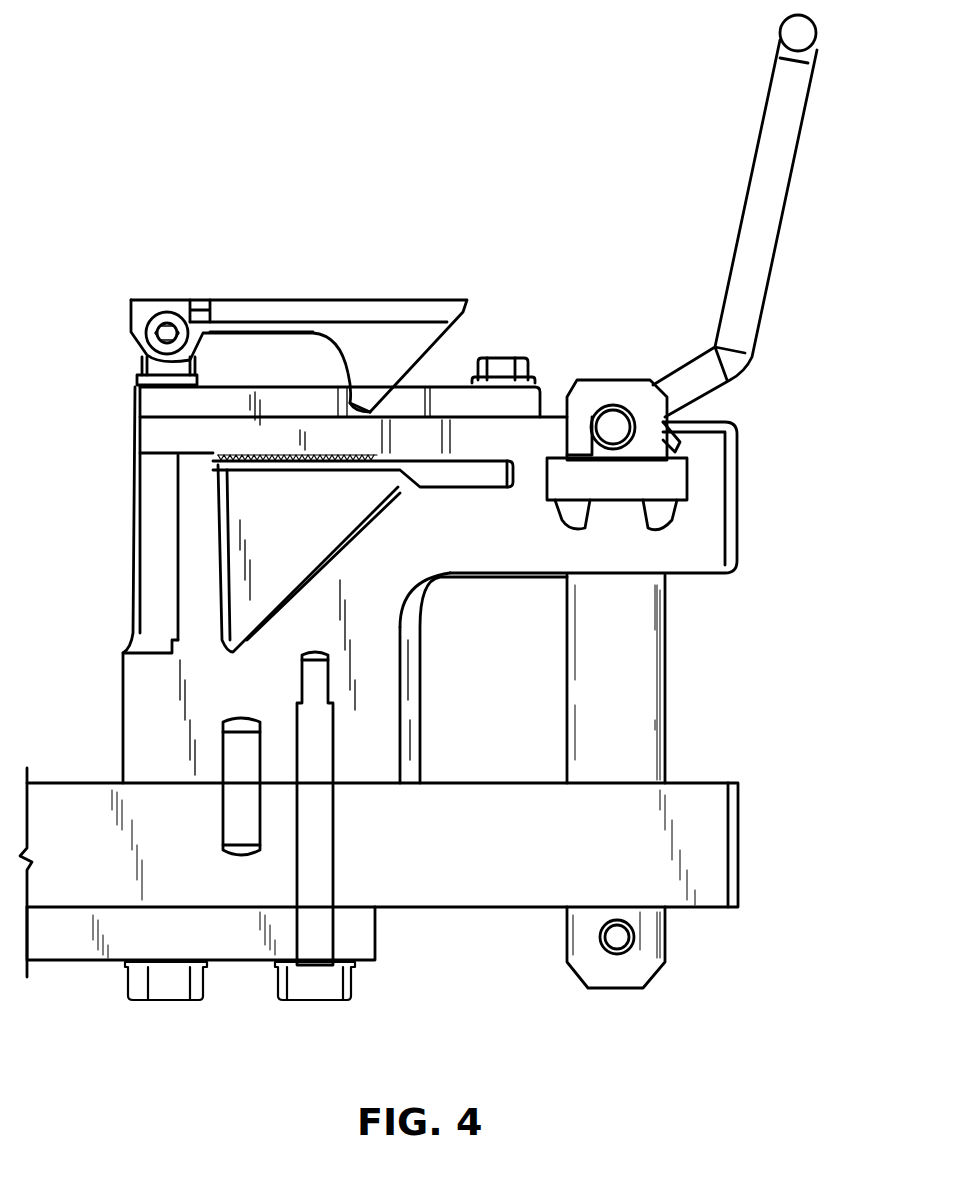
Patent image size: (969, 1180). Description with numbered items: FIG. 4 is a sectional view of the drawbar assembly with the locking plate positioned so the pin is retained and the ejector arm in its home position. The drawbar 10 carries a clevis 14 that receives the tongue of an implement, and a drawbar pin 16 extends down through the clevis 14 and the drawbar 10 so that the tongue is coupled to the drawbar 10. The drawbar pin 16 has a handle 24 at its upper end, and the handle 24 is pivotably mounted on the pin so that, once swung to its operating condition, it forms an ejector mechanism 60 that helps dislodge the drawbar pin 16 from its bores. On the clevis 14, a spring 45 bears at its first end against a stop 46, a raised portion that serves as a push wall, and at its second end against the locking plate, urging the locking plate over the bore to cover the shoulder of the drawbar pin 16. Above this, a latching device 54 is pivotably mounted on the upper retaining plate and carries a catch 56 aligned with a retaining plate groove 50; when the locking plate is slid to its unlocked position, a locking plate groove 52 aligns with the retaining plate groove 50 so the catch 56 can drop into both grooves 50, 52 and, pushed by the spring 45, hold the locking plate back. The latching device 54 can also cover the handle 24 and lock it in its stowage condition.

The drawbar 10 is at (738, 840).
The clevis 14 is at (737, 515).
The drawbar pin 16 is at (667, 715).
The handle 24 is at (785, 220).
The spring 45 is at (283, 460).
The stop 46 is at (207, 447).
The retaining plate groove 50 is at (428, 400).
The locking plate groove 52 is at (393, 485).
The latching device 54 is at (375, 295).
The catch 56 is at (355, 410).
The ejector mechanism 60 is at (760, 406).